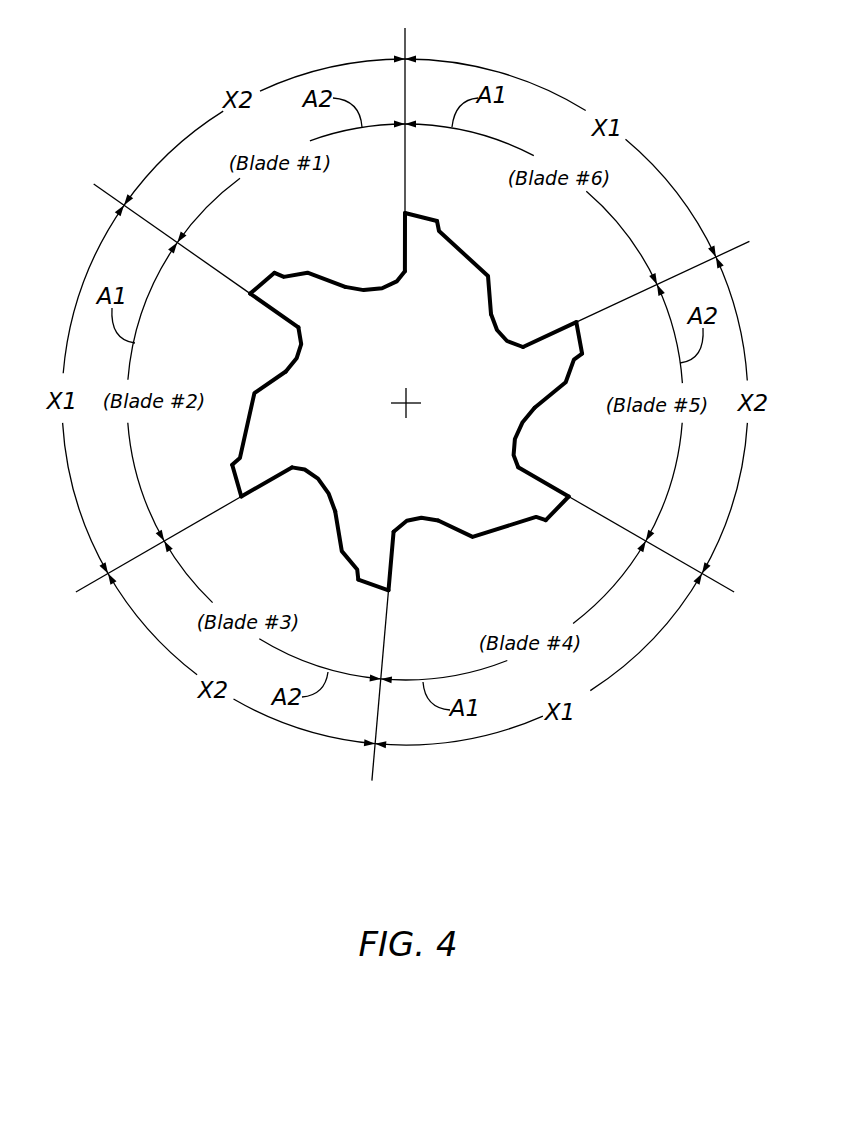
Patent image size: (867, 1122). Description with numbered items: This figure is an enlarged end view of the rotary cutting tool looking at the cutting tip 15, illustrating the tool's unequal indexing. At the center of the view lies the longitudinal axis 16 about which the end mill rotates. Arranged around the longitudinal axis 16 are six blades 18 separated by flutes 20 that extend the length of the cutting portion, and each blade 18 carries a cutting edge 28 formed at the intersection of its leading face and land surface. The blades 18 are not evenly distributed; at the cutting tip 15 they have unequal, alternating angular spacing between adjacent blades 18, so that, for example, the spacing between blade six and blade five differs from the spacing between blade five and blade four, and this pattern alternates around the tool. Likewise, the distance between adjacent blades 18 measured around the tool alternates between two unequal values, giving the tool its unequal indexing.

The cutting tip 15 is at (399, 468).
The longitudinal axis 16 is at (407, 401).
The blades 18 is at (250, 278).
The flutes 20 is at (368, 260).
The cutting edge 28 is at (402, 214).